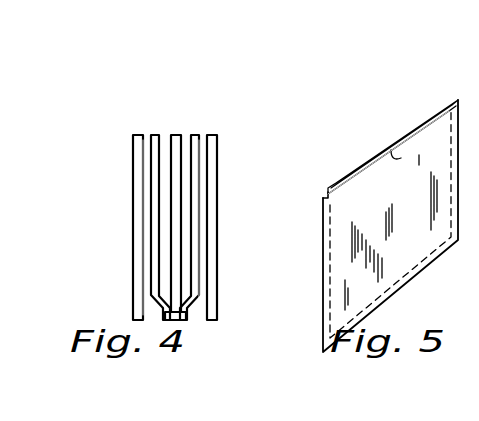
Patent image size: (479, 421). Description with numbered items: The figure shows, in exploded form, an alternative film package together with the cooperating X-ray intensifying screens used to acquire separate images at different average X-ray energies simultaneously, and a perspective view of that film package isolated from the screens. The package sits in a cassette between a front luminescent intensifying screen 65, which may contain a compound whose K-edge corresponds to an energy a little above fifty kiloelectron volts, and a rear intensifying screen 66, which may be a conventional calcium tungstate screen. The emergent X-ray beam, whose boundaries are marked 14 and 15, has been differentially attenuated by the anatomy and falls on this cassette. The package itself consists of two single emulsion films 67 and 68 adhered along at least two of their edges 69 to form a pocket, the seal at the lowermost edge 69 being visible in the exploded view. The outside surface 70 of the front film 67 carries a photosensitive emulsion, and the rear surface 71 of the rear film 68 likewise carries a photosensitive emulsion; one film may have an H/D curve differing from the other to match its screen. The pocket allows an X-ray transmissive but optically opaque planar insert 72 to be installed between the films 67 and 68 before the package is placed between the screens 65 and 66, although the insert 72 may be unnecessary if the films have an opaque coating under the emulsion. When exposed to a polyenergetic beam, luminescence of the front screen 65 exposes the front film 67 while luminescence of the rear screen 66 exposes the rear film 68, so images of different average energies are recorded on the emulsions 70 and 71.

In FIG. 4, the emergent X-ray beam boundary 14 is at (118, 145).
In FIG. 4, the emergent X-ray beam boundary 15 is at (118, 287).
In FIG. 4, the front luminescent intensifying screen 65 is at (138, 133).
In FIG. 5, the front luminescent intensifying screen 65 is at (376, 188).
In FIG. 4, the rear intensifying screen 66 is at (211, 135).
In FIG. 5, the rear intensifying screen 66 is at (418, 258).
In FIG. 4, the front single emulsion film 67 is at (155, 133).
In FIG. 4, the rear single emulsion film 68 is at (193, 135).
In FIG. 4, the adhered edges 69 is at (178, 318).
In FIG. 4, the outside surface of front film 70 is at (148, 185).
In FIG. 4, the rear surface of rear film 71 is at (195, 217).
In FIG. 4, the planar insert 72 is at (176, 135).
In FIG. 5, the planar insert 72 is at (430, 127).